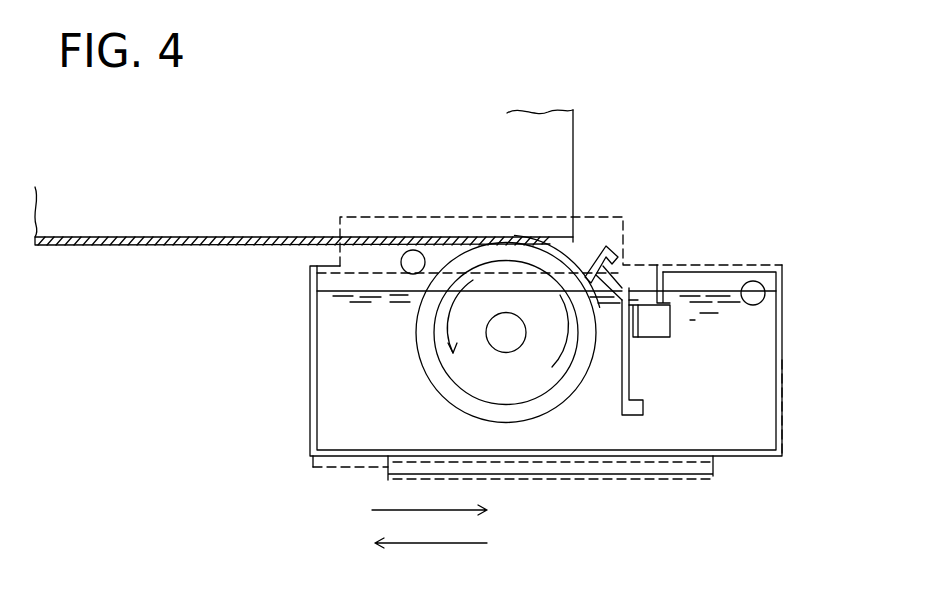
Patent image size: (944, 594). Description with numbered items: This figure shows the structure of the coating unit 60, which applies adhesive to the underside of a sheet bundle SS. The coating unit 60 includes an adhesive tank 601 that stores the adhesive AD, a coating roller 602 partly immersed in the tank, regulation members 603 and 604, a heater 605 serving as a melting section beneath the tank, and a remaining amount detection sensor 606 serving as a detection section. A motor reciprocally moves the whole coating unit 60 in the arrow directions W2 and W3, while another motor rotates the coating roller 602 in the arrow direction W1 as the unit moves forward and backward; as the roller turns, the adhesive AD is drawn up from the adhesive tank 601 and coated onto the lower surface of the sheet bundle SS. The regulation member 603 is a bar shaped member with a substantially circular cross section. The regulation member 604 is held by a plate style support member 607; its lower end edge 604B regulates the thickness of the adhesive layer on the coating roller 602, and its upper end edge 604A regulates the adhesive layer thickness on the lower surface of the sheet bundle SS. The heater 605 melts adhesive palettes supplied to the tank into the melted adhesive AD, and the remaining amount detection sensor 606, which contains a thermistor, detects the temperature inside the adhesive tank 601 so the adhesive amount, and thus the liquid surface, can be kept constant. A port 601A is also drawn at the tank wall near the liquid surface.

The coating unit 60 is at (805, 202).
The adhesive tank 601 is at (783, 410).
The liquid supply port 601A is at (765, 288).
The coating roller 602 is at (508, 389).
The regulation member 603 is at (402, 270).
The regulation member 604 is at (550, 238).
The upper end edge 604A is at (610, 247).
The lower end edge 604B is at (507, 353).
The heater 605 is at (650, 474).
The remaining amount detection sensor 606 is at (670, 332).
The support member 607 is at (630, 383).
The sheet bundle SS is at (573, 128).
The adhesive AD is at (752, 349).
The arrow direction W1 is at (507, 319).
The arrow direction W2 is at (405, 509).
The arrow direction W3 is at (405, 542).